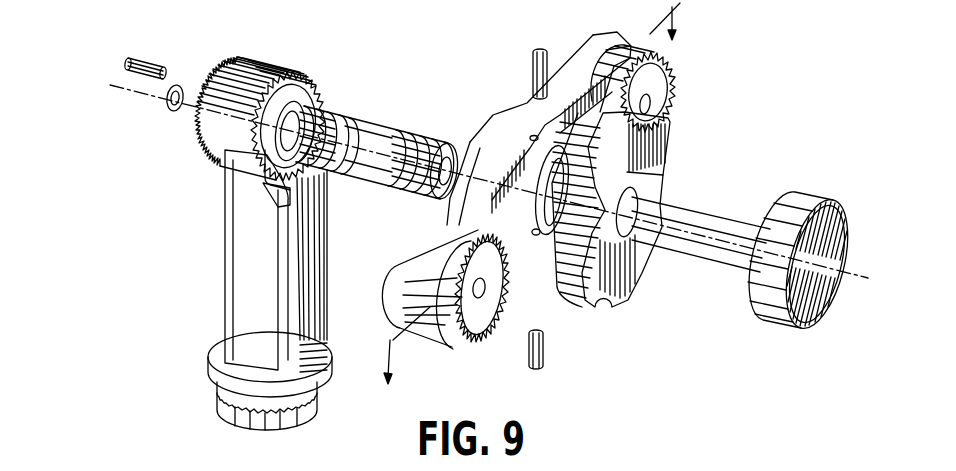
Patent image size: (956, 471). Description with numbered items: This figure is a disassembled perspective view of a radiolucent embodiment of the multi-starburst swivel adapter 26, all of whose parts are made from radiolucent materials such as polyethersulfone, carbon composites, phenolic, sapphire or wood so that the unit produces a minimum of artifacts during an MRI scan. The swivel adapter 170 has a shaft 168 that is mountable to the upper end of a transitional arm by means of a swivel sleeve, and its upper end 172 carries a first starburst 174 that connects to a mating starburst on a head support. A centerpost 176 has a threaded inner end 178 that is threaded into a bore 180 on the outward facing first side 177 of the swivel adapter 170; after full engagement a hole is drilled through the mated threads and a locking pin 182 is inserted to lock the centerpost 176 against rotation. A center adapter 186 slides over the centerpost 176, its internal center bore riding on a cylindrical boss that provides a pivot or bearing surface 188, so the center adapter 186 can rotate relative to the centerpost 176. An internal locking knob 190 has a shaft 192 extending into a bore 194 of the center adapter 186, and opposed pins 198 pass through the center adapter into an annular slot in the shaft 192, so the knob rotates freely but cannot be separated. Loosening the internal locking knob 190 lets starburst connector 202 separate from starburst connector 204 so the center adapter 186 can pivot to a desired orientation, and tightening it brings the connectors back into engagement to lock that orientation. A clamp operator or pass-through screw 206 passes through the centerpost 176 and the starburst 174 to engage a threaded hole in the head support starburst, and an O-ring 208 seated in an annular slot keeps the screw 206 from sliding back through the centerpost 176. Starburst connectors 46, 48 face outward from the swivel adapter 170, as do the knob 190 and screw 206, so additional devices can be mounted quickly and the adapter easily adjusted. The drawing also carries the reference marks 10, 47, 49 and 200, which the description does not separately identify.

The section line 10 is at (531, 192).
The multi-starburst swivel adapter 26 is at (642, 372).
The starburst connector 46 is at (428, 343).
The gear teeth 47 is at (490, 336).
The starburst connector 48 is at (631, 62).
The gear teeth 49 is at (673, 70).
The shaft 168 is at (230, 405).
The swivel adapter 170 is at (222, 256).
The upper end 172 is at (258, 56).
The first starburst 174 is at (222, 66).
The centerpost 176 is at (367, 190).
The outward facing first side 177 is at (263, 168).
The threaded inner end 178 is at (340, 110).
The bore 180 is at (317, 93).
The locking pin 182 is at (142, 58).
The center adapter 186 is at (590, 45).
The pivot or bearing surface 188 is at (378, 131).
The internal locking knob 190 is at (630, 291).
The shaft 192 is at (600, 168).
The bore 194 is at (540, 250).
The opposed pins 198 is at (534, 56).
The knurled end portion 200 is at (430, 130).
The starburst connector 202 is at (470, 153).
The starburst connector 204 is at (277, 192).
The clamp operator or pass-through screw 206 is at (802, 193).
The O-ring 208 is at (163, 102).